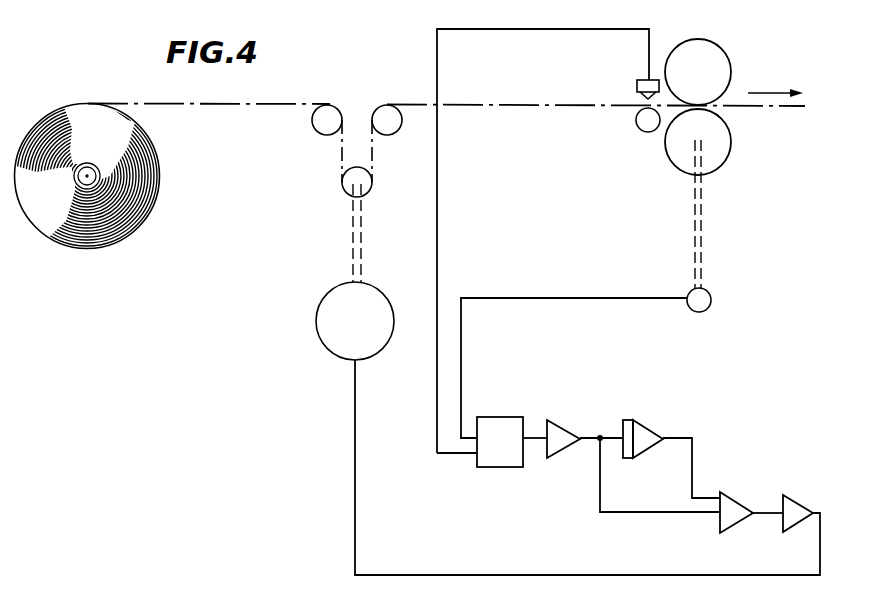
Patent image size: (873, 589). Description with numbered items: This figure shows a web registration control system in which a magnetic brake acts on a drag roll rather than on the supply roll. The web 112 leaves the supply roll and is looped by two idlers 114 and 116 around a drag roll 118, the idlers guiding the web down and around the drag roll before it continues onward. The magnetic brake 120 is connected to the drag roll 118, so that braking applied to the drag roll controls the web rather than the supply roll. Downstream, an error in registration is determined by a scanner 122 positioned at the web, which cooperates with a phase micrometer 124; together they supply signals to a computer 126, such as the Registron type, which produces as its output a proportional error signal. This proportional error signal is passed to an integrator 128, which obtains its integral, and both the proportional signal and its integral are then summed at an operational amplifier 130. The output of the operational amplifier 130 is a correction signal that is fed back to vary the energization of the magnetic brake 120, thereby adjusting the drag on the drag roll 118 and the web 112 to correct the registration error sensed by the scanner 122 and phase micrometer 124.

The web 112 is at (249, 104).
The idler 114 is at (321, 135).
The idler 116 is at (391, 136).
The drag roll 118 is at (345, 195).
The magnetic brake 120 is at (372, 292).
The scanner 122 is at (634, 86).
The phase micrometer 124 is at (713, 300).
The computer 126 is at (501, 417).
The integrator 128 is at (648, 428).
The operational amplifier 130 is at (733, 495).